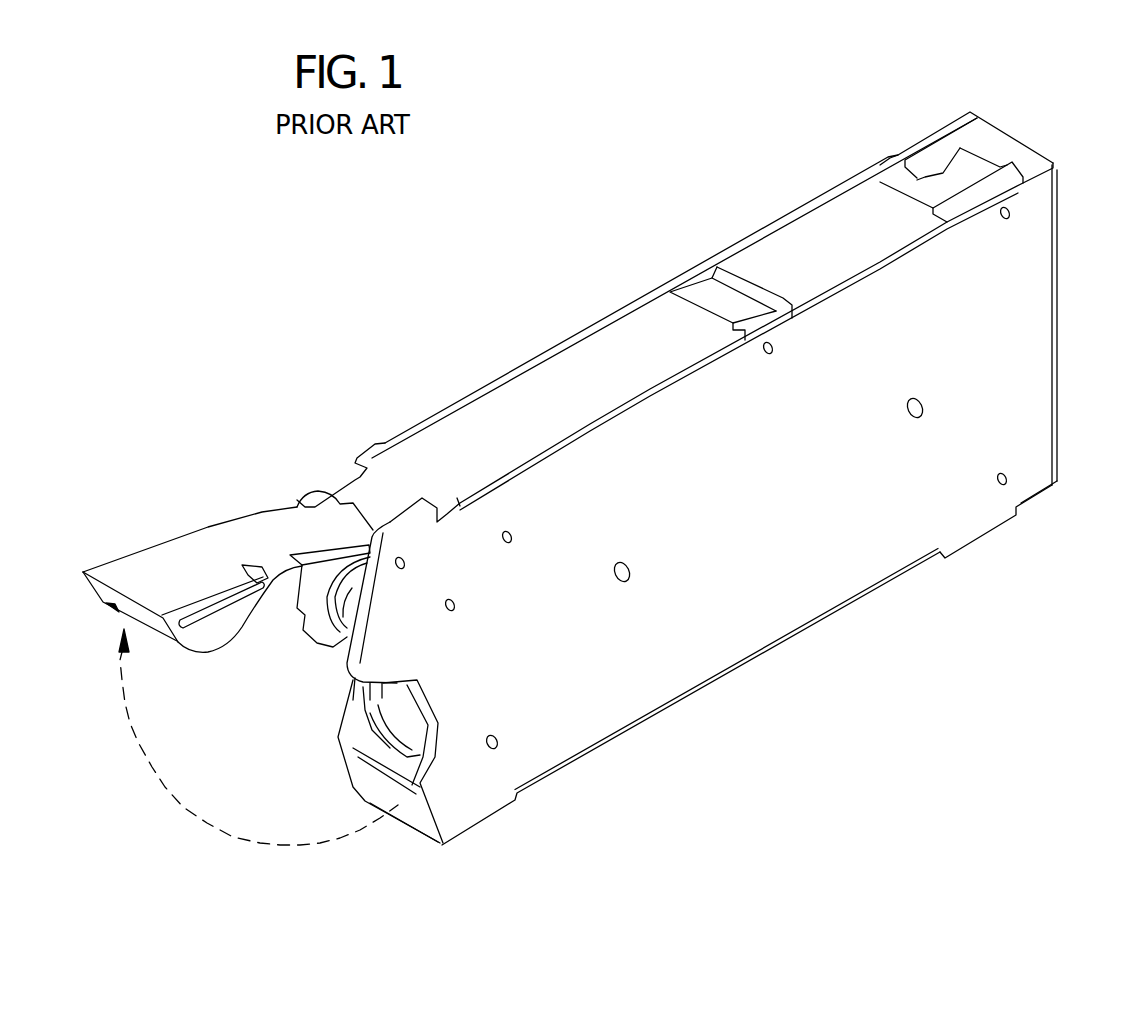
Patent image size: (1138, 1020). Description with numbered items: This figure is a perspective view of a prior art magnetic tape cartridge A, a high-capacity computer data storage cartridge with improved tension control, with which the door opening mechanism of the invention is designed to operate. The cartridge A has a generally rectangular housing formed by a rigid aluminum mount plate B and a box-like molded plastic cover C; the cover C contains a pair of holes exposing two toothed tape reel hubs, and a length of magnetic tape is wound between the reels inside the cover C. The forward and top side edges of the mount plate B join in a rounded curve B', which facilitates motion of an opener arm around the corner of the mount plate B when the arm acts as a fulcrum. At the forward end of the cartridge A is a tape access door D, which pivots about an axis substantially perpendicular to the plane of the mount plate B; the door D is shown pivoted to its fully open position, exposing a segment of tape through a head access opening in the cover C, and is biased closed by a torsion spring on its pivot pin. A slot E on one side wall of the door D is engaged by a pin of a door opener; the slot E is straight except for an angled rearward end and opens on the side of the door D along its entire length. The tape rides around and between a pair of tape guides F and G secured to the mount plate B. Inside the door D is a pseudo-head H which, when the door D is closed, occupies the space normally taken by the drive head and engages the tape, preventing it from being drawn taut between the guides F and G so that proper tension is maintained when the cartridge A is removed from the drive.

The magnetic tape cartridge A is at (828, 702).
The mount plate B is at (742, 503).
The rounded curve B' is at (318, 534).
The plastic cover C is at (597, 367).
The tape access door D is at (234, 549).
The slot E is at (215, 613).
The tape guide F is at (352, 590).
The tape guide G is at (400, 718).
The pseudo-head H is at (195, 655).